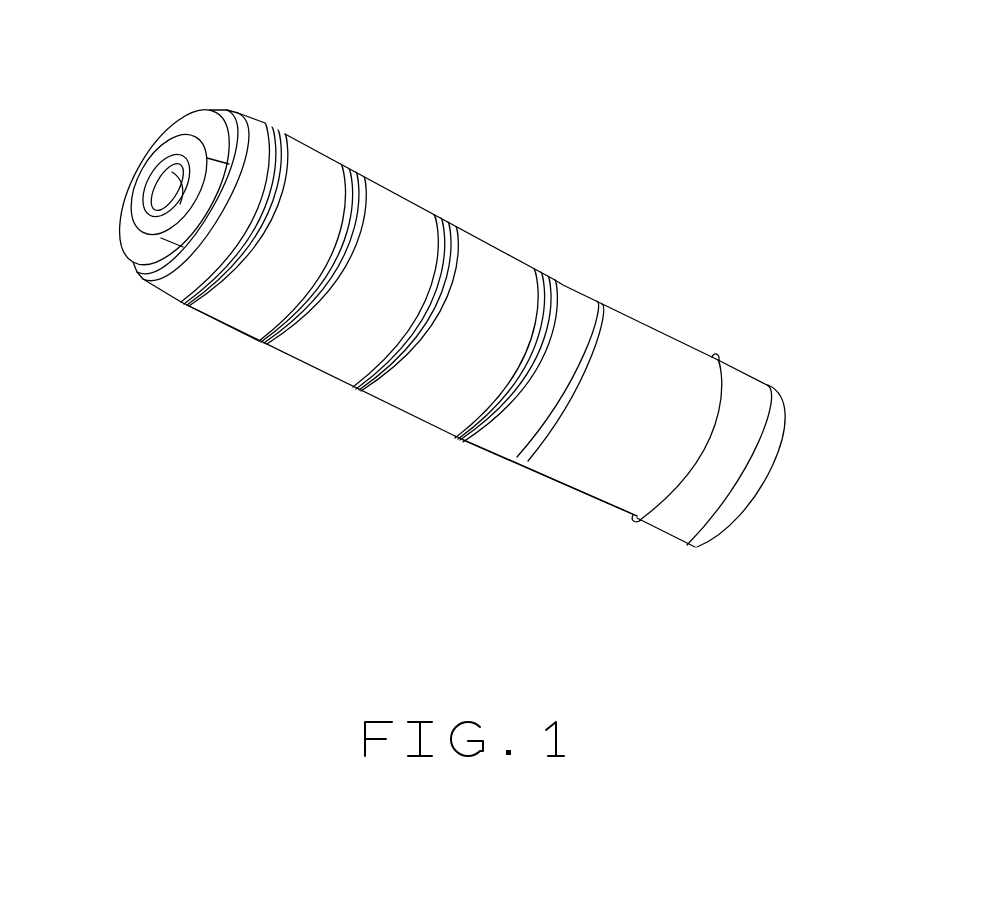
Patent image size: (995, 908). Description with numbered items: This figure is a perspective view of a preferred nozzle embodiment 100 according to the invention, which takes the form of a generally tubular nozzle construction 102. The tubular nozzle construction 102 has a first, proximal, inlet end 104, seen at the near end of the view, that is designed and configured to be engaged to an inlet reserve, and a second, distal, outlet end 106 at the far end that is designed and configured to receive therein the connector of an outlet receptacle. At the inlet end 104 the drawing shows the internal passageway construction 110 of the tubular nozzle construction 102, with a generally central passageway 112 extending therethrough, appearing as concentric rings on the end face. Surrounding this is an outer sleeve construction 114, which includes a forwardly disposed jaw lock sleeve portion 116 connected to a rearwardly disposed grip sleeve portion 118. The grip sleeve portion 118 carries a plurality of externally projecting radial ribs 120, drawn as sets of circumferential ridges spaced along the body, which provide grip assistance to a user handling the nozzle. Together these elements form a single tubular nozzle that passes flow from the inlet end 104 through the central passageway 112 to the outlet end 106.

The nozzle embodiment 100 is at (405, 140).
The tubular nozzle construction 102 is at (525, 251).
The inlet end 104 is at (187, 110).
The outlet end 106 is at (790, 401).
The internal passageway construction 110 is at (176, 132).
The central passageway 112 is at (160, 191).
The outer sleeve construction 114 is at (652, 320).
The jaw lock sleeve portion 116 is at (572, 488).
The grip sleeve portion 118 is at (333, 377).
The radial ribs 120 is at (253, 345).